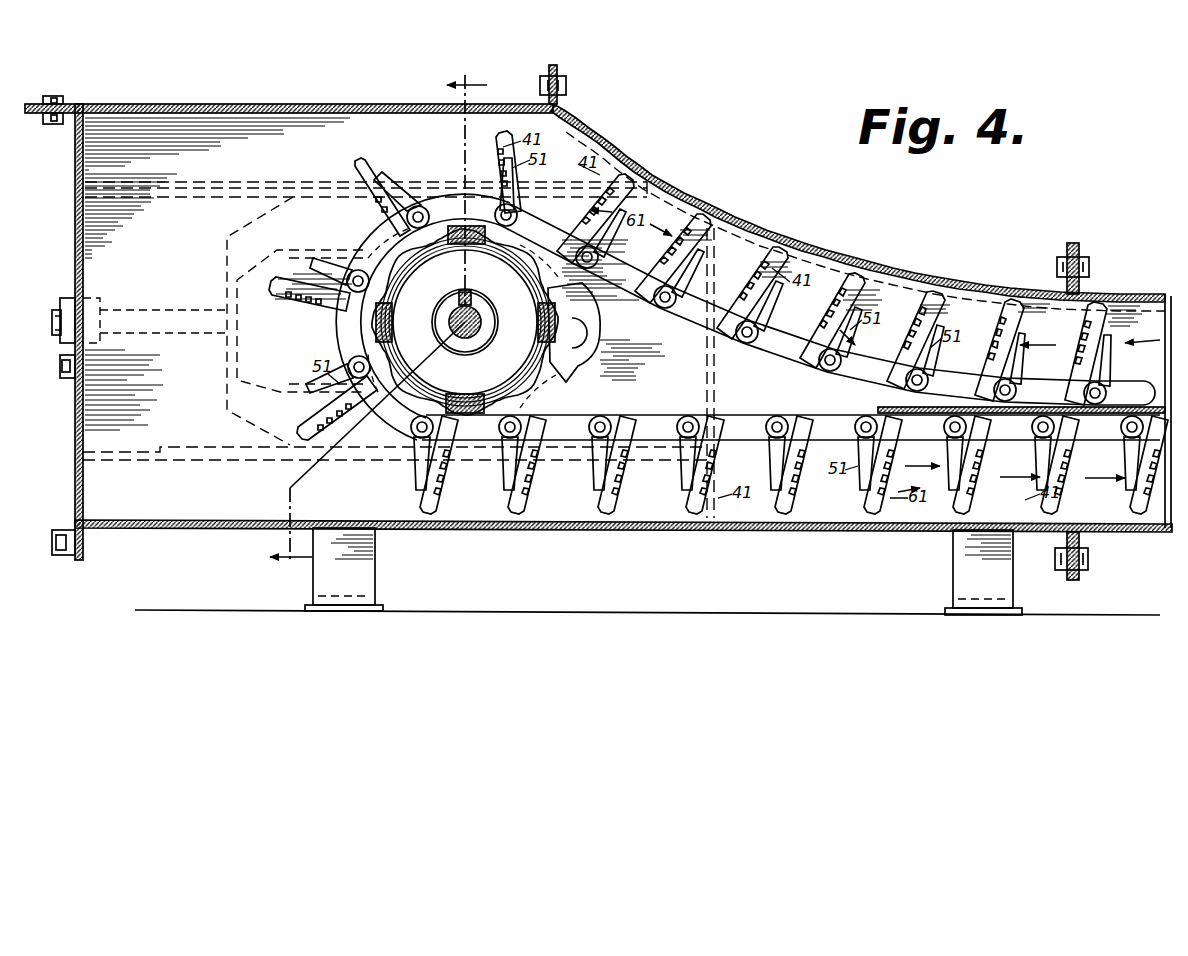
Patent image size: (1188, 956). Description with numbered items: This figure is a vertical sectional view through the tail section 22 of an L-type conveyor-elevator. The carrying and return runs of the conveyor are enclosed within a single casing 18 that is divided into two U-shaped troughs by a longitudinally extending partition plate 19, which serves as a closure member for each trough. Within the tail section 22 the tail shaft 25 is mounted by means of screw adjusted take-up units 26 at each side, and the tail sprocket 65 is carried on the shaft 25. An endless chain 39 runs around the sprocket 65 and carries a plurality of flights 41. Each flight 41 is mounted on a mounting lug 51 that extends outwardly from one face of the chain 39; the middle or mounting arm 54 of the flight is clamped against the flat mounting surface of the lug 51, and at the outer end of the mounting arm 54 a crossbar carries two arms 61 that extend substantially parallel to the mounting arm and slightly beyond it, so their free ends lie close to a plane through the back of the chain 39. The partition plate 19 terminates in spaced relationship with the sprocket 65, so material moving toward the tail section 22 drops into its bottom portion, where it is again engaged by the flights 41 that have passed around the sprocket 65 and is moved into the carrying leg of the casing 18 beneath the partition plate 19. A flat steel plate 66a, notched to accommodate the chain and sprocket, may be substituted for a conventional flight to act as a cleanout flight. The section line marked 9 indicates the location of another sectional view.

The section line 9- 9 is at (378, 321).
The casing 18 is at (1110, 296).
The partition plate 19 is at (1118, 406).
The tail section 22 is at (808, 244).
The tail shaft 25 is at (467, 340).
The take-up units 26 is at (233, 384).
The chain 39 is at (783, 353).
The flights 41 is at (438, 502).
The mounting lug 51 is at (683, 473).
The mounting arm 54 is at (541, 482).
The arms 61 is at (612, 489).
The tail sprocket 65 is at (585, 352).
The flat steel plate 66a is at (363, 172).